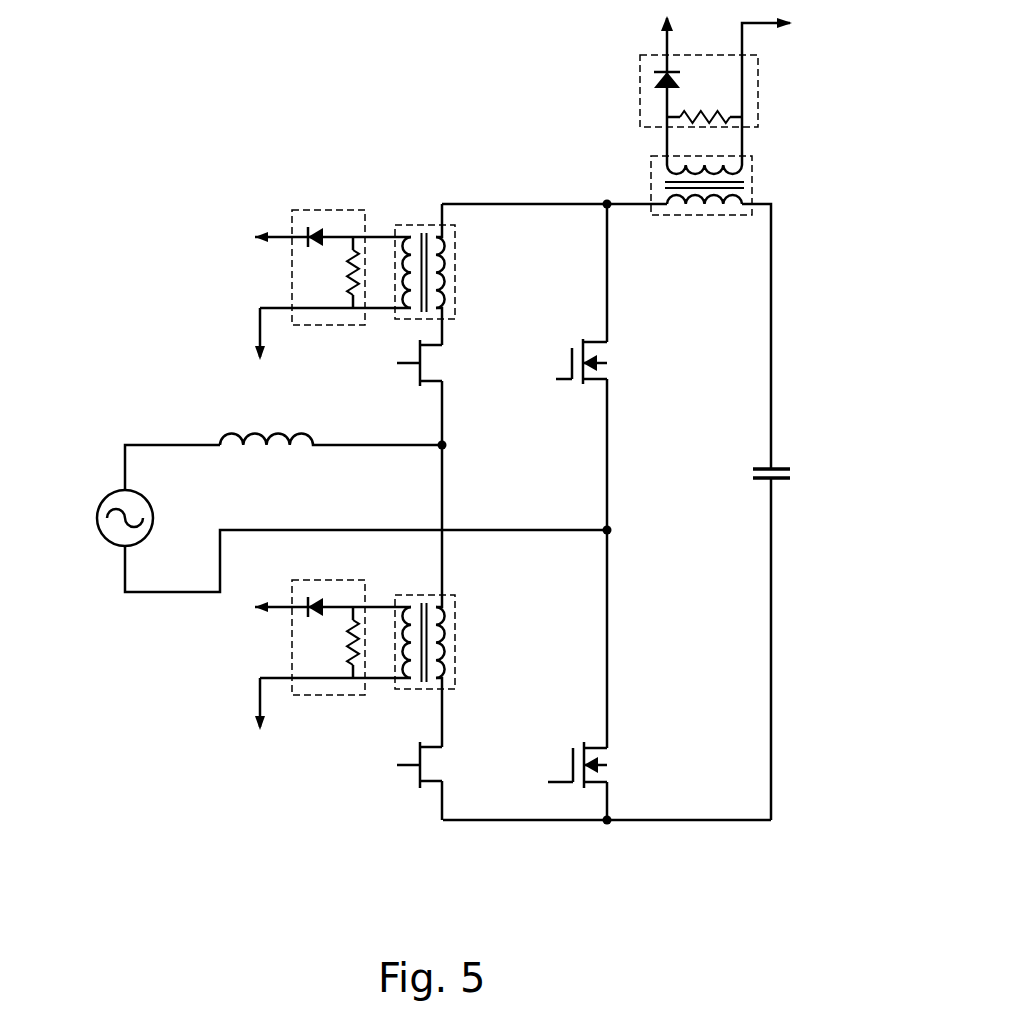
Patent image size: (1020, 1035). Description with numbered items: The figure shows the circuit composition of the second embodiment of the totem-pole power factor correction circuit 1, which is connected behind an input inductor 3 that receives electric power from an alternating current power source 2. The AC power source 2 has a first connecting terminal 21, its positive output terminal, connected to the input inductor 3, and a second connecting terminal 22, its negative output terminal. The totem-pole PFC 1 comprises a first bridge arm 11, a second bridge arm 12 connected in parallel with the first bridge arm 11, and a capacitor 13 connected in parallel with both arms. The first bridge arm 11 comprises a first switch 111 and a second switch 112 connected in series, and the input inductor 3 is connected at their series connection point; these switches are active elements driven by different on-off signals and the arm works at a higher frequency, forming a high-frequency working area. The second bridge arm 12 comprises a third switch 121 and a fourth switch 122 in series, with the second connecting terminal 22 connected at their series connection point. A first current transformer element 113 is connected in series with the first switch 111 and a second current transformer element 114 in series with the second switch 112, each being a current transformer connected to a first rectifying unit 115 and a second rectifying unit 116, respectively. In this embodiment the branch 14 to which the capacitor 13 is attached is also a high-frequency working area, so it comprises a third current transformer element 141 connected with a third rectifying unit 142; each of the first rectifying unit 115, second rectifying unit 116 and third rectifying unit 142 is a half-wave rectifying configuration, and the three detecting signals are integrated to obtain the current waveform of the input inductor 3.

The totem-pole power factor correction circuit 1 is at (588, 840).
The alternating current power source 2 is at (97, 507).
The first connecting terminal 21 is at (125, 470).
The second connecting terminal 22 is at (123, 568).
The input inductor 3 is at (300, 435).
The first bridge arm 11 is at (522, 487).
The first switch 111 is at (440, 363).
The second switch 112 is at (445, 770).
The first current transformer element 113 is at (415, 222).
The second current transformer element 114 is at (420, 595).
The first rectifying unit 115 is at (327, 210).
The second rectifying unit 116 is at (330, 695).
The second bridge arm 12 is at (689, 476).
The third switch 121 is at (612, 370).
The fourth switch 122 is at (610, 752).
The capacitor 13 is at (776, 483).
The branch 14 is at (771, 353).
The third current transformer element 141 is at (651, 178).
The third rectifying unit 142 is at (640, 73).